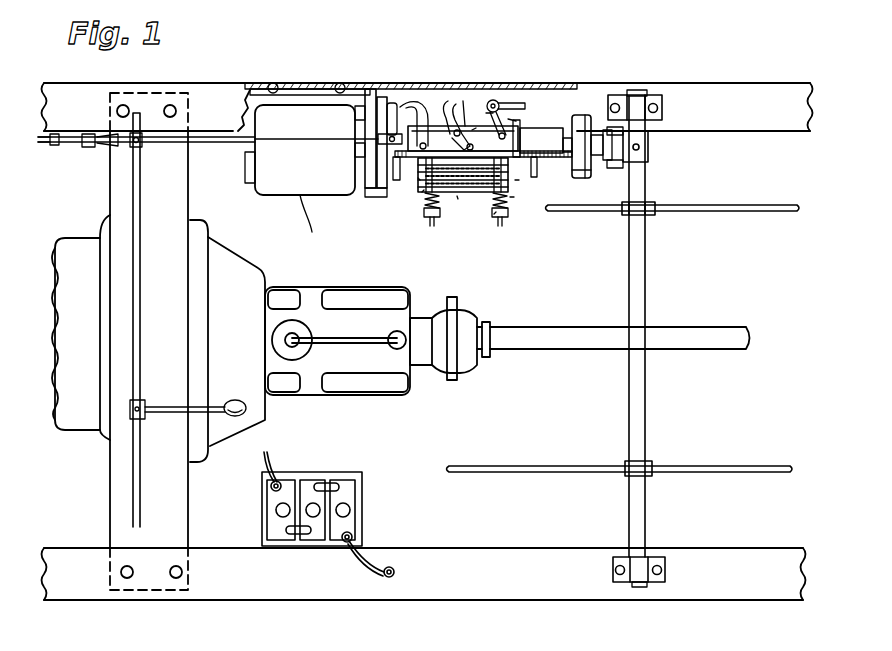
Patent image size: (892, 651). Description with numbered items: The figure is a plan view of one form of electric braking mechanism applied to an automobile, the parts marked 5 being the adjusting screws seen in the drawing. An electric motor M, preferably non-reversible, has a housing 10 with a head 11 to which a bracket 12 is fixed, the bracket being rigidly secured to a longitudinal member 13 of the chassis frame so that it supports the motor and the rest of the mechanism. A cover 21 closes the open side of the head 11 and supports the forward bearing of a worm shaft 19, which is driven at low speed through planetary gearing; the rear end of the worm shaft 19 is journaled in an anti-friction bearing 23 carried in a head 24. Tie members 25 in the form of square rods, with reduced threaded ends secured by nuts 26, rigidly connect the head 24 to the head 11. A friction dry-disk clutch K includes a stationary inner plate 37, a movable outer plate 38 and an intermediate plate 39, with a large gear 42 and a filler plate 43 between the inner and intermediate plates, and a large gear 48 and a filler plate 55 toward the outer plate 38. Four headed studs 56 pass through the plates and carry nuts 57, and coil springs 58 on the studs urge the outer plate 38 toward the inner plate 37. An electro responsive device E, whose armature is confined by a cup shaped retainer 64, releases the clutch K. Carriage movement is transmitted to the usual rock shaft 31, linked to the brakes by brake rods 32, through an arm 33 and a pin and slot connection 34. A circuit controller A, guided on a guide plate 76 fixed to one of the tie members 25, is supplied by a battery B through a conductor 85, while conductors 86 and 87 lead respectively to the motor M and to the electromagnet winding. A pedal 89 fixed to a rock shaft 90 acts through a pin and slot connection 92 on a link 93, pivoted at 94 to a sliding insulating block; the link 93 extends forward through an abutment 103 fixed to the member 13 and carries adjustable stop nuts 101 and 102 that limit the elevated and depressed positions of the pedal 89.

The adjusting screw 5 is at (398, 185).
The housing 10 is at (281, 138).
The head 11 is at (373, 92).
The bracket 12 is at (307, 90).
The longitudinal member 13 is at (213, 92).
The worm shaft 19 is at (515, 170).
The cover 21 is at (392, 112).
The anti-friction bearing 23 is at (577, 122).
The head 24 is at (610, 128).
The tie members 25 is at (570, 172).
The nuts 26 is at (600, 130).
The rock shaft 31 is at (645, 183).
The brake rods 32 is at (580, 212).
The arm 33 is at (648, 158).
The pin and slot connection 34 is at (614, 168).
The inner plate 37 is at (444, 112).
The outer plate 38 is at (487, 190).
The intermediate plate 39 is at (517, 180).
The second relatively large gear 42 is at (418, 178).
The filler plate 43 is at (537, 150).
The relatively large gear 48 is at (422, 192).
The filler plate 55 is at (512, 197).
The headed studs 56 is at (430, 228).
The nuts 57 is at (503, 228).
The coil springs 58 is at (494, 214).
The cup shaped retainer 64 is at (492, 112).
The guide plate 76 is at (540, 134).
The conductor 85 is at (463, 101).
The conductor 86 is at (412, 113).
The conductor 87 is at (508, 119).
The pedal 89 is at (218, 404).
The rock shaft 90 is at (142, 337).
The pin and slot connection 92 is at (108, 136).
The link 93 is at (163, 144).
The pivot 94 is at (364, 127).
The nut 101 is at (53, 148).
The nut 102 is at (90, 148).
The abutment 103 is at (58, 128).
The circuit controller A is at (485, 112).
The battery B is at (355, 510).
The electro responsive device E is at (472, 130).
The clutch K is at (459, 205).
The electric motor M is at (270, 176).